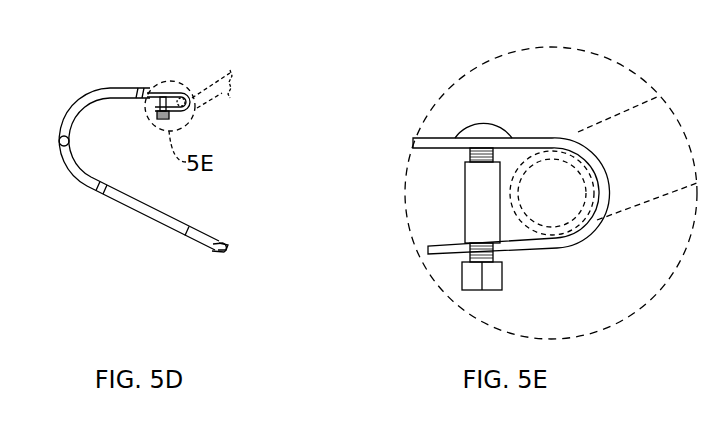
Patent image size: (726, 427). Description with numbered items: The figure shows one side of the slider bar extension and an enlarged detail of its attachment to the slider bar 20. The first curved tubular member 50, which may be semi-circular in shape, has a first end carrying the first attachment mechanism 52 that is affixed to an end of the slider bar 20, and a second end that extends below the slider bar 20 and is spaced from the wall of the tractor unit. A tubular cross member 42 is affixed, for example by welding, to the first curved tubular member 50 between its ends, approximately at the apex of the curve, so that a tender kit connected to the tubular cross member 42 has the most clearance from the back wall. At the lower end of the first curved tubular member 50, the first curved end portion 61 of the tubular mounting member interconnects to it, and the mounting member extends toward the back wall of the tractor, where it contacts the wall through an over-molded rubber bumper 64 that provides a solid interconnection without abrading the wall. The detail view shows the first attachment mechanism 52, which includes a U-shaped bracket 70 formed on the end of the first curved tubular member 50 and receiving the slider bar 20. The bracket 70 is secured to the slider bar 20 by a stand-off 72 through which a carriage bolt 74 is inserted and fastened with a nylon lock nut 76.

In FIG. 5D, the slider bar 20 is at (203, 78).
In FIG. 5E, the slider bar 20 is at (578, 130).
In FIG. 5D, the tubular cross member 42 is at (59, 139).
In FIG. 5D, the first curved tubular member 50 is at (82, 190).
In FIG. 5D, the first attachment mechanism 52 is at (163, 92).
In FIG. 5D, the first curved end portion 61 is at (157, 227).
In FIG. 5D, the over-molded rubber bumper 64 is at (228, 243).
In FIG. 5E, the U-shaped bracket 70 is at (511, 196).
In FIG. 5E, the stand-off 72 is at (465, 225).
In FIG. 5E, the carriage bolt 74 is at (460, 136).
In FIG. 5E, the nylon lock nut 76 is at (497, 290).